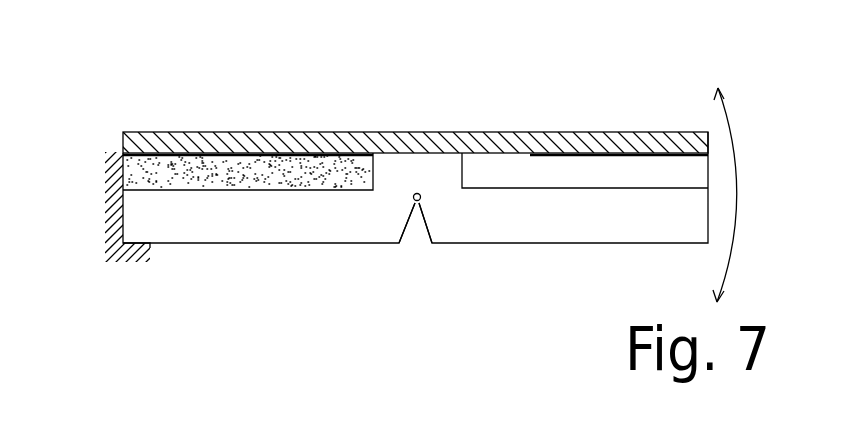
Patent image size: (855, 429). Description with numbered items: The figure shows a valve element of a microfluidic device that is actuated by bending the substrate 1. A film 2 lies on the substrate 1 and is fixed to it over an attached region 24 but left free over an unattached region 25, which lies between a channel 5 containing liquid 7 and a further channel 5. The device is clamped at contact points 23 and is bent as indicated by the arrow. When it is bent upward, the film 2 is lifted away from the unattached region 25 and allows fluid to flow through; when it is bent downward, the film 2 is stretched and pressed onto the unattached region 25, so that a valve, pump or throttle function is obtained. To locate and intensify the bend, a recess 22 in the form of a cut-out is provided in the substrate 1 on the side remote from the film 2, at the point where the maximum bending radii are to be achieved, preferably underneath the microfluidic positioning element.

The substrate 1 is at (345, 220).
The film 2 is at (507, 142).
The channel 5 is at (662, 168).
The liquid 7 is at (205, 167).
The recess/cut-out 22 is at (425, 233).
The contact points 23 is at (140, 243).
The attached region 24 is at (598, 152).
The unattached region 25 is at (433, 163).